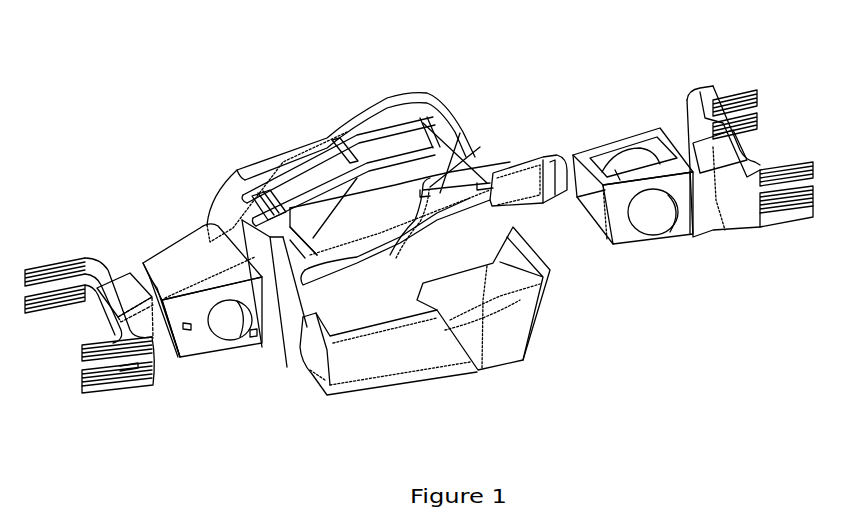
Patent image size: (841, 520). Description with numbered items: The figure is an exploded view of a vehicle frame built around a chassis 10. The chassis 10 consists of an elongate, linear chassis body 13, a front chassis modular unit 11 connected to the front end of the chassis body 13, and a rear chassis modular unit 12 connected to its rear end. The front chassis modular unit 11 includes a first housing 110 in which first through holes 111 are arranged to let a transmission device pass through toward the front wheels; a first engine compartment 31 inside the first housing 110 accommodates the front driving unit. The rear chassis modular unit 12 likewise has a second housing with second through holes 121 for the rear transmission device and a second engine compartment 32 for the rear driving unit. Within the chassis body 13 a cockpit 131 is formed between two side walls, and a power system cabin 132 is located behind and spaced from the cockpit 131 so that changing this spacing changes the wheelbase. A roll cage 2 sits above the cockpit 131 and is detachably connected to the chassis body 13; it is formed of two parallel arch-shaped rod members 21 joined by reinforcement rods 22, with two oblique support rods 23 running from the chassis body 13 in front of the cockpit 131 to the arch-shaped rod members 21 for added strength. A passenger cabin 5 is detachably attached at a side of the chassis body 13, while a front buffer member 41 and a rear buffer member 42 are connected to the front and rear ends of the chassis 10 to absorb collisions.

The chassis 10 is at (167, 66).
The front chassis modular unit 11 is at (222, 243).
The rear chassis modular unit 12 is at (613, 142).
The chassis body 13 is at (440, 210).
The roll cage 2 is at (283, 217).
The arch-shaped rod members 21 is at (367, 130).
The reinforcement rods 22 is at (333, 146).
The oblique support rods 23 is at (300, 205).
The first engine compartment 31 is at (138, 278).
The second engine compartment 32 is at (660, 157).
The front buffer member 41 is at (97, 395).
The rear buffer member 42 is at (713, 147).
The passenger cabin 5 is at (437, 345).
The first housing 110 is at (180, 354).
The first through holes 111 is at (237, 325).
The second through holes 121 is at (663, 222).
The cockpit 131 is at (343, 268).
The power system cabin 132 is at (533, 183).